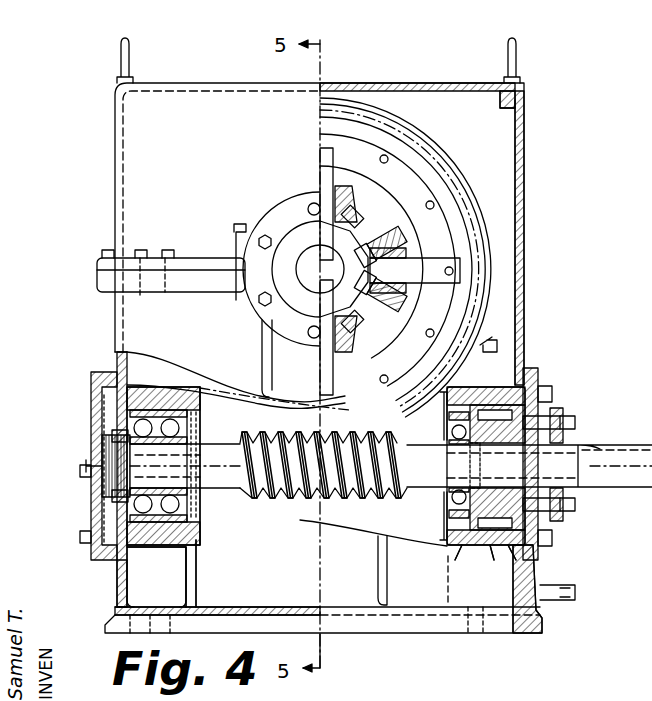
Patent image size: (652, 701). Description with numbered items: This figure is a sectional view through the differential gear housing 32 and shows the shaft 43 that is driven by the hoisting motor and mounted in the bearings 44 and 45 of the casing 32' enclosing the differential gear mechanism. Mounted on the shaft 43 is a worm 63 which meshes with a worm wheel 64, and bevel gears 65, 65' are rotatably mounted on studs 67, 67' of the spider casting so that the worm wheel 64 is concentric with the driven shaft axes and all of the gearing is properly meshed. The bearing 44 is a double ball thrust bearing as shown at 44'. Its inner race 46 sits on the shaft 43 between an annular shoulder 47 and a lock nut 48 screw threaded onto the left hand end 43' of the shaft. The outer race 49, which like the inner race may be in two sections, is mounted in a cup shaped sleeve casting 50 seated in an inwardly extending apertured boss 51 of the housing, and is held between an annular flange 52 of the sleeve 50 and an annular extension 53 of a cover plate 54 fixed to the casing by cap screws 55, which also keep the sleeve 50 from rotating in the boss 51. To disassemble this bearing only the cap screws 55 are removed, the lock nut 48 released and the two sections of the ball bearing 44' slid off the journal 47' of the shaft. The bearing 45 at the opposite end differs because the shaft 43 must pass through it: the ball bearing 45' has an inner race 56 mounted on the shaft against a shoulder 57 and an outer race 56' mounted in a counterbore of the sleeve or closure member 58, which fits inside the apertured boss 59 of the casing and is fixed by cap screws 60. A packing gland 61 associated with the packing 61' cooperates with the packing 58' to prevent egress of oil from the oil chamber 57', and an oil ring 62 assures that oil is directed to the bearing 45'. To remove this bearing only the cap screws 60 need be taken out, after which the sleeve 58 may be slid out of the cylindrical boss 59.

The housing 32 is at (363, 335).
The differential gear housing 32' is at (552, 242).
The worm wheel 64 is at (500, 222).
The bevel gear 65 is at (371, 321).
The bevel gear 65' is at (400, 195).
The stud 67 is at (303, 337).
The stud 67' is at (378, 220).
The worm 63 is at (268, 488).
The annular shoulder 47 is at (426, 442).
The shaft 43 is at (219, 501).
The bearing 44 is at (100, 495).
The double ball thrust bearing 44' is at (163, 436).
The outer race 49 is at (172, 412).
The inner race 46 is at (180, 486).
The annular flange 52 is at (197, 522).
The cover plate 54 is at (96, 446).
The left hand end of the shaft 43' is at (76, 466).
The lock nut 48 is at (118, 499).
The cap screws 55 is at (82, 537).
The annular extension 53 is at (104, 546).
The journal 47' is at (106, 583).
The cup shaped sleeve casting 50 is at (146, 549).
The apertured boss 51 is at (192, 550).
The bearing 45 is at (536, 454).
The ball bearing 45' is at (470, 438).
The inner race 56 is at (429, 511).
The outer race 56' is at (425, 396).
The shoulder 57 is at (437, 430).
The oil chamber 57' is at (466, 537).
The oil ring 62 is at (448, 506).
The packing gland 61 is at (580, 464).
The packing 61' is at (516, 446).
The cap screws 60 is at (556, 545).
The apertured boss 59 is at (460, 547).
The sleeve or closure member 58 is at (484, 574).
The packing 58' is at (529, 603).